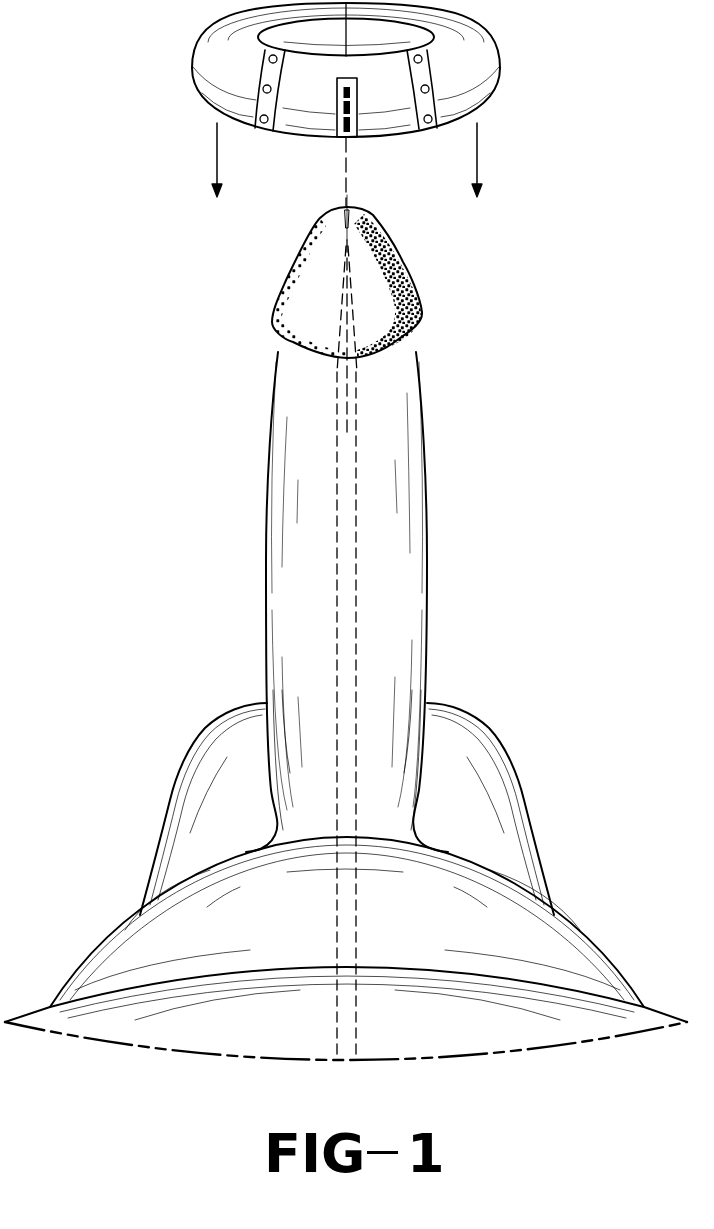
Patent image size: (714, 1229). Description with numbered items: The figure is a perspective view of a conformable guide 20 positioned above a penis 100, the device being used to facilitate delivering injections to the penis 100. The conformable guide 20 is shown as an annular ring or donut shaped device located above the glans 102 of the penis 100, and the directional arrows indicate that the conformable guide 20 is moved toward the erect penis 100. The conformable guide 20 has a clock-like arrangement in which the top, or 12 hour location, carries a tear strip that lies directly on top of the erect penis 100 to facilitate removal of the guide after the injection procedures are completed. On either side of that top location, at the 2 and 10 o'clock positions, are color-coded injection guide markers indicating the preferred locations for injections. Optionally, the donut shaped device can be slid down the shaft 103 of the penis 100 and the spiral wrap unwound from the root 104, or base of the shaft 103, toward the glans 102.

The conformable guide 20 is at (492, 86).
The 2 o'clock position 2 is at (270, 109).
The 10 o'clock position 10 is at (428, 109).
The 12 hour location 12 is at (347, 127).
The penis 100 is at (423, 470).
The glans 102 is at (317, 297).
The shaft 103 is at (313, 562).
The root 104 is at (415, 825).